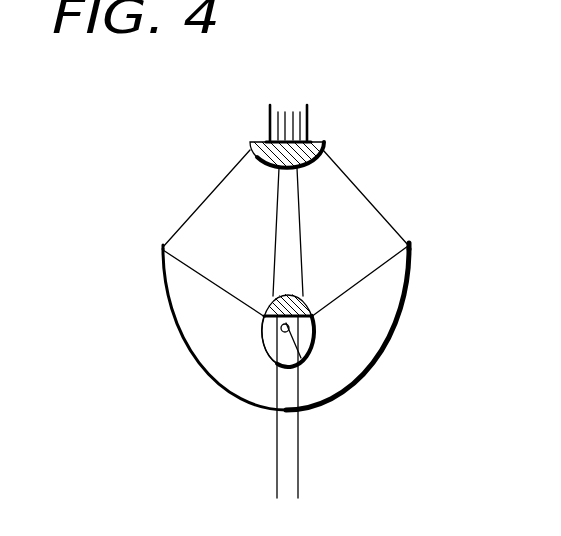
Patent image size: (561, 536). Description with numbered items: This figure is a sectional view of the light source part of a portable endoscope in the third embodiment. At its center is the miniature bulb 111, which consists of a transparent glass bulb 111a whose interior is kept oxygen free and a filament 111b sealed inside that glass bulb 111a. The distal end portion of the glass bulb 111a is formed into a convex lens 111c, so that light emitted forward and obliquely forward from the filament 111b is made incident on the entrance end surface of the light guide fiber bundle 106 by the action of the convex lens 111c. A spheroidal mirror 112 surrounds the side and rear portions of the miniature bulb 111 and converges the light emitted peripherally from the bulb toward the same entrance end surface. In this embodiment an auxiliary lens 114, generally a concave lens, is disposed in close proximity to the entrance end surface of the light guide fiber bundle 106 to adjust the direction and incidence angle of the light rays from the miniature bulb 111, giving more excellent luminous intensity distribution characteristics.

The light guide fiber bundle 106 is at (307, 114).
The auxiliary lens 114 is at (325, 147).
The spheroidal mirror 112 is at (404, 298).
The miniature bulb 111 is at (293, 371).
The transparent glass bulb 111a is at (265, 347).
The filament 111b is at (304, 362).
The convex lens 111c is at (318, 338).